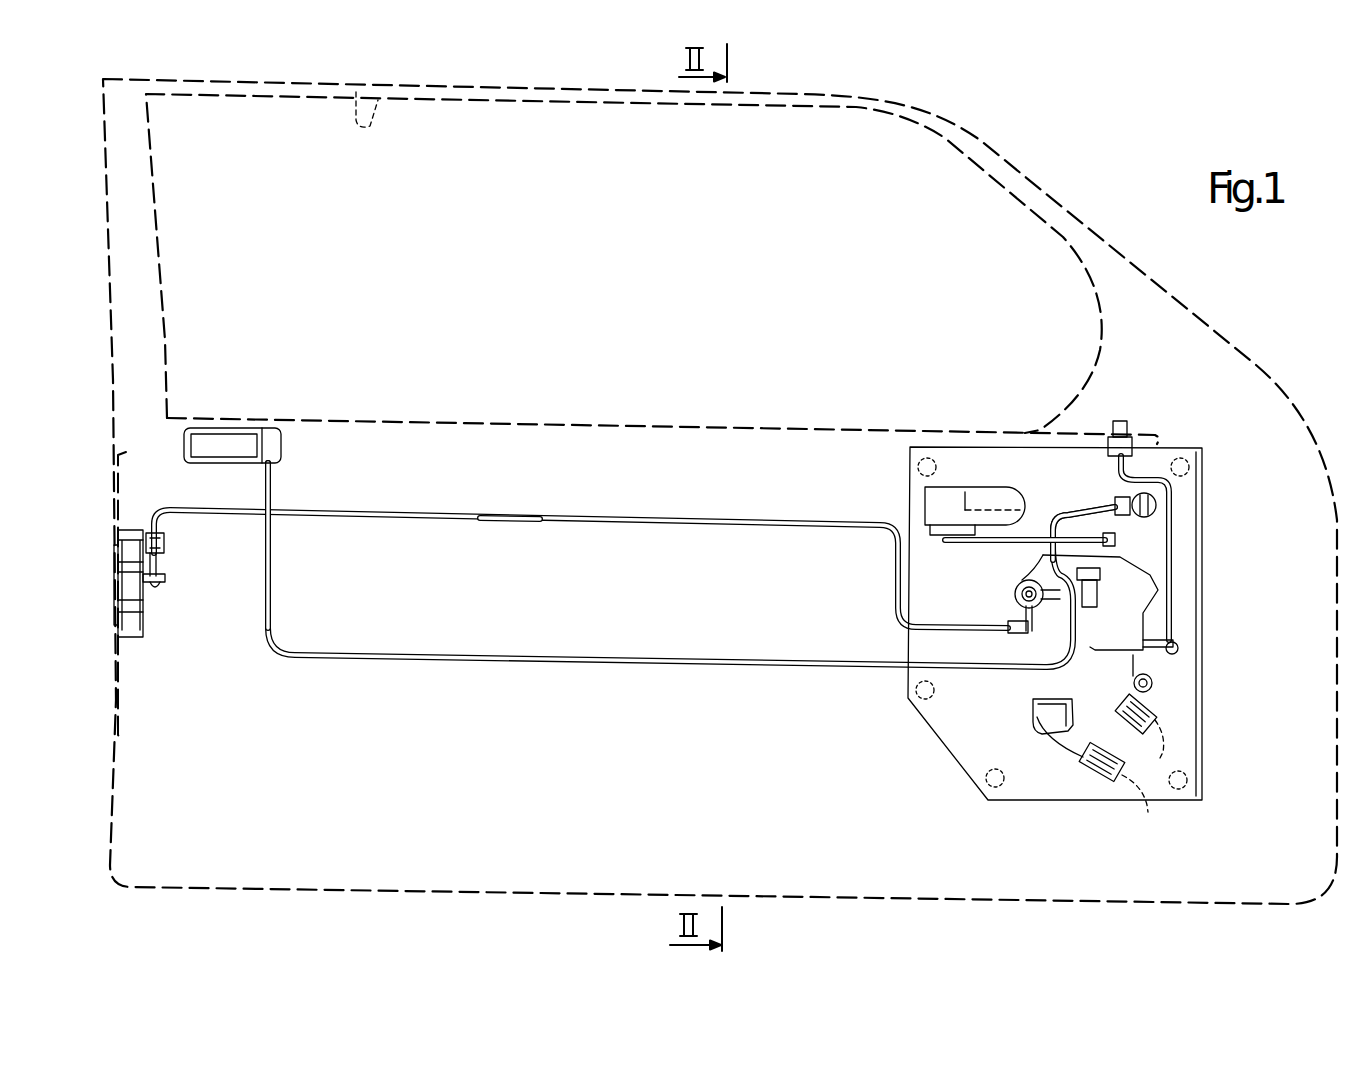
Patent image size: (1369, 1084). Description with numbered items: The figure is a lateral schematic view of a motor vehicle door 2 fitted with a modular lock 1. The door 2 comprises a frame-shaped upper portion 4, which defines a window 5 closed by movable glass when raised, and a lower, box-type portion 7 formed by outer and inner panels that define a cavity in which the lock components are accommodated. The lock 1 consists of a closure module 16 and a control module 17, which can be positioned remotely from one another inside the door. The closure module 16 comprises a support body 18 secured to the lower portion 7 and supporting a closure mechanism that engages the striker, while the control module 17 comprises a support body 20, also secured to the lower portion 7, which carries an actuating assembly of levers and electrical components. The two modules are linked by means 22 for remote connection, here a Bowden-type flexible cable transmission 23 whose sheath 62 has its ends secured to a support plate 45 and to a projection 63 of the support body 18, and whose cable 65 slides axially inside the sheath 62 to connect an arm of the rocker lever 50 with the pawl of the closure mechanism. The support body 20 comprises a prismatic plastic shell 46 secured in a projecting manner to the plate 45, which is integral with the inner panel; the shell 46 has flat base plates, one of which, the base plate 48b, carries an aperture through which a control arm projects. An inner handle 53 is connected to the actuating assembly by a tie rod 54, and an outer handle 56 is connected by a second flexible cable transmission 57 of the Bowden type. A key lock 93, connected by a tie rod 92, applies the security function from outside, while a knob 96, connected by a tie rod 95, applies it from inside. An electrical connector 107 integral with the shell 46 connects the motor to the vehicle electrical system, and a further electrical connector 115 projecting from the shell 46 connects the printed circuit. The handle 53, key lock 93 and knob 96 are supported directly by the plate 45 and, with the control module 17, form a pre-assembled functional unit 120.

The modular lock 1 is at (627, 505).
The door 2 is at (1025, 167).
The upper portion 4 is at (816, 92).
The window 5 is at (356, 84).
The lower portion 7 is at (437, 850).
The closure module 16 is at (130, 641).
The control module 17 is at (1080, 728).
The support body 18 is at (118, 578).
The support body 20 is at (1207, 463).
The means for remote connection 22 is at (573, 513).
The flexible cable transmission 23 is at (508, 515).
The support plate 45 is at (1187, 530).
The prismatic shell 46 is at (1119, 603).
The base plate 48b is at (1101, 685).
The rocker lever 50 is at (1032, 582).
The inner handle 53 is at (944, 507).
The tie rod 54 is at (1030, 538).
The outer handle 56 is at (220, 445).
The flexible cable transmission 57 is at (700, 665).
The sheath 62 is at (423, 515).
The projection 63 is at (147, 533).
The cable 65 is at (165, 568).
The tie rod 92 is at (1078, 515).
The key lock 93 is at (1158, 502).
The tie rod 95 is at (1173, 559).
The knob 96 is at (1124, 447).
The electrical connector 107 is at (1108, 770).
The electrical connector 115 is at (1158, 710).
The functional unit 120 is at (968, 728).